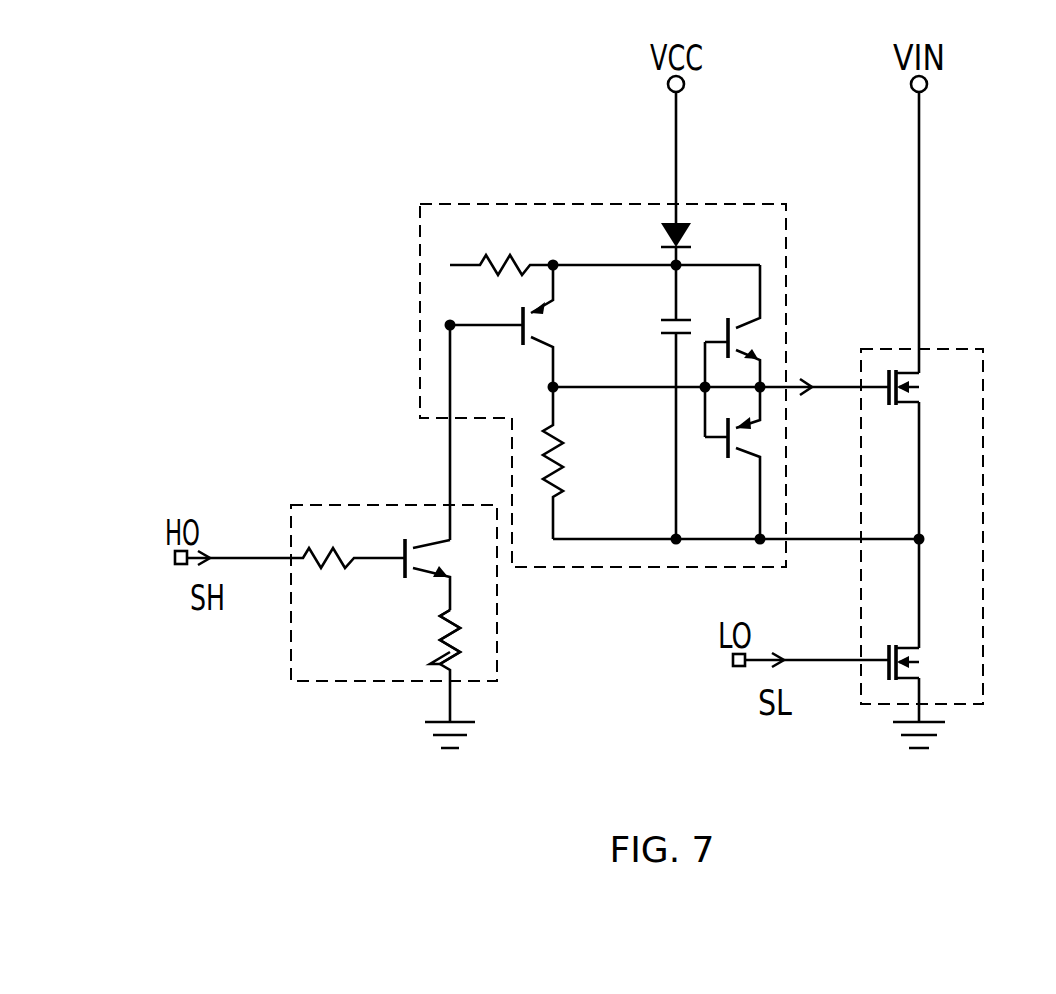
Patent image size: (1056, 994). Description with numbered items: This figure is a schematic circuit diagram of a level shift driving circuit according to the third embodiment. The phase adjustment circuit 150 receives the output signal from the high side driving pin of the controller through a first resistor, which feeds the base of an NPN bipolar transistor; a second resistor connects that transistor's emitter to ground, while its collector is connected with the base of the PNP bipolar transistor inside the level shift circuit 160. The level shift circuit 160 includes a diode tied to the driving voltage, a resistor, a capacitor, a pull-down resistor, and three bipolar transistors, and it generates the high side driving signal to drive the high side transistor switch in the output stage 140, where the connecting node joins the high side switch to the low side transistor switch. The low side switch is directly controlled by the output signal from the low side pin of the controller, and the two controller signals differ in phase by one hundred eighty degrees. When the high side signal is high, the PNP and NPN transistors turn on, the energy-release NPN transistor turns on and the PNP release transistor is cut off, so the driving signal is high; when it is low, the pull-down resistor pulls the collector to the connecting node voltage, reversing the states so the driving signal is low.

The output stage with transistors T1 and T2 140 is at (946, 349).
The phase adjustment circuit 150 is at (348, 505).
The level shift circuit 160 is at (745, 204).